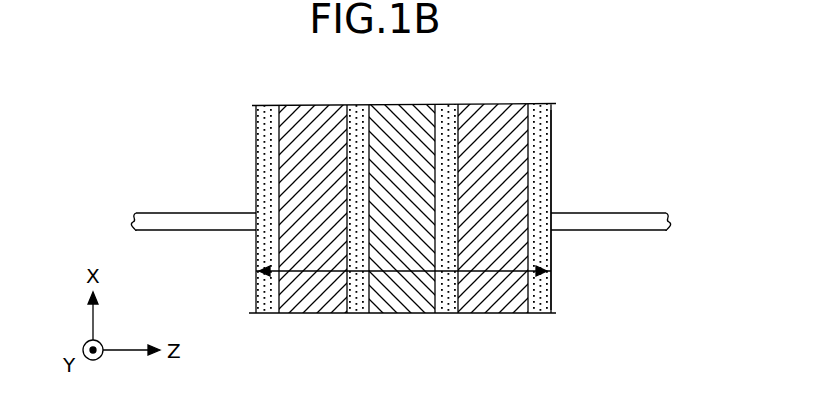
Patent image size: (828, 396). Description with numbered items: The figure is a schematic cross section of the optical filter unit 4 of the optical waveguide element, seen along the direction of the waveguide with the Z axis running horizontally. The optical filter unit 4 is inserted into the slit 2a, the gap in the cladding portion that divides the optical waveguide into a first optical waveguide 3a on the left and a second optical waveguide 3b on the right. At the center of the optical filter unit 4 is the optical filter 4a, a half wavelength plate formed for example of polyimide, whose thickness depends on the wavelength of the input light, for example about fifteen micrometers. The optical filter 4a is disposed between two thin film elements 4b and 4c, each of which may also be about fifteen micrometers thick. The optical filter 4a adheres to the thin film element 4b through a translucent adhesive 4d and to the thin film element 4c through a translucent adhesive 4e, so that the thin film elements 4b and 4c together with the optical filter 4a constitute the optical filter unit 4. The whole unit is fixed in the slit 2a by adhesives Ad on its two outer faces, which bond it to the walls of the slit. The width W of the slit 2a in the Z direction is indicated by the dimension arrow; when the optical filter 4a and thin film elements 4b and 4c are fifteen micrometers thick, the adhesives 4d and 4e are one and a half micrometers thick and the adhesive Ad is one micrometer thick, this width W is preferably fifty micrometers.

The optical filter unit 4 is at (547, 60).
The optical filter 4a is at (407, 105).
The thin film element 4b is at (312, 105).
The thin film element 4c is at (495, 110).
The translucent adhesive 4d is at (358, 313).
The translucent adhesive 4e is at (448, 313).
The adhesive Ad is at (268, 313).
The slit 2a is at (550, 133).
The first optical waveguide 3a is at (190, 213).
The second optical waveguide 3b is at (650, 213).
The width of the slit W is at (495, 270).